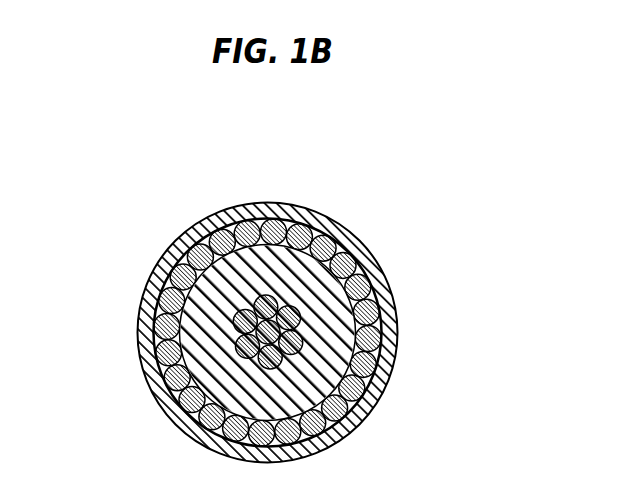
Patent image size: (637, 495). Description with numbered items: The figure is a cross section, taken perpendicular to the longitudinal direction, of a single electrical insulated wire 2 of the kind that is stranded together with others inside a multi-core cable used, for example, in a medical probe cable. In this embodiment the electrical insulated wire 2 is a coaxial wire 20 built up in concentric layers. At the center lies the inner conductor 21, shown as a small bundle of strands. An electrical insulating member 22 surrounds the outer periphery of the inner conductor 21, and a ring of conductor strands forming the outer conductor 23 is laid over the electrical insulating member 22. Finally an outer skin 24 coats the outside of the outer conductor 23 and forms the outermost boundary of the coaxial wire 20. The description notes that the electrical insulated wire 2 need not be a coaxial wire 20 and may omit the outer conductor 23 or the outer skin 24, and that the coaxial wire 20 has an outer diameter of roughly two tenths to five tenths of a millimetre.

The electrical insulated wire 2 is at (196, 184).
The coaxial wire 20 is at (317, 226).
The inner conductor 21 is at (352, 252).
The electrical insulating member 22 is at (317, 306).
The outer conductor 23 is at (389, 339).
The outer skin 24 is at (379, 387).